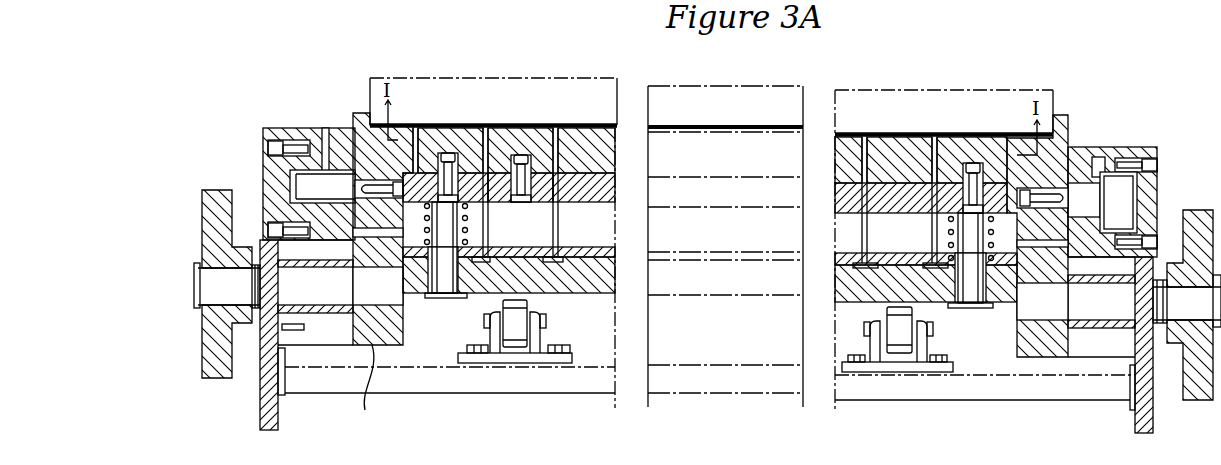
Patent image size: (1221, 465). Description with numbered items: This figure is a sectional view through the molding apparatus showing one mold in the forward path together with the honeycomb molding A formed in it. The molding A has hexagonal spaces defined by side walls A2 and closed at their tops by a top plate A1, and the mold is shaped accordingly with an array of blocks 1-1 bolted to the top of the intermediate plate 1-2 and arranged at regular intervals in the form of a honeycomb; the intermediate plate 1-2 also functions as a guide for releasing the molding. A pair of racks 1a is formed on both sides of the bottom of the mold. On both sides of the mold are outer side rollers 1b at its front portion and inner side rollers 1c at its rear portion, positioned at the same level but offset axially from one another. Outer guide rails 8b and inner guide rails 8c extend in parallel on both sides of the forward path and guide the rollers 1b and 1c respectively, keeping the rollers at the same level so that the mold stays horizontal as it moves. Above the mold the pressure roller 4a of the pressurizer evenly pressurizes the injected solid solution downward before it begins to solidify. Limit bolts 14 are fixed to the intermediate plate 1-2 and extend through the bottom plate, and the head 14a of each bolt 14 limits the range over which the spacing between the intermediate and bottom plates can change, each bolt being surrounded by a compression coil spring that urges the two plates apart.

The blocks 1-1 is at (372, 120).
The intermediate plate 1-2 is at (500, 187).
The racks 1a is at (436, 172).
The outer side rollers 1b is at (280, 163).
The inner side rollers 1c is at (332, 163).
The outer guide rails 8b is at (305, 128).
The inner guide rails 8c is at (327, 127).
The honeycomb molding A is at (413, 150).
The top plate A1 is at (542, 127).
The side walls A2 is at (560, 157).
The pressure roller 4a is at (994, 85).
The limit bolts 14 is at (970, 278).
The head 14a is at (960, 305).